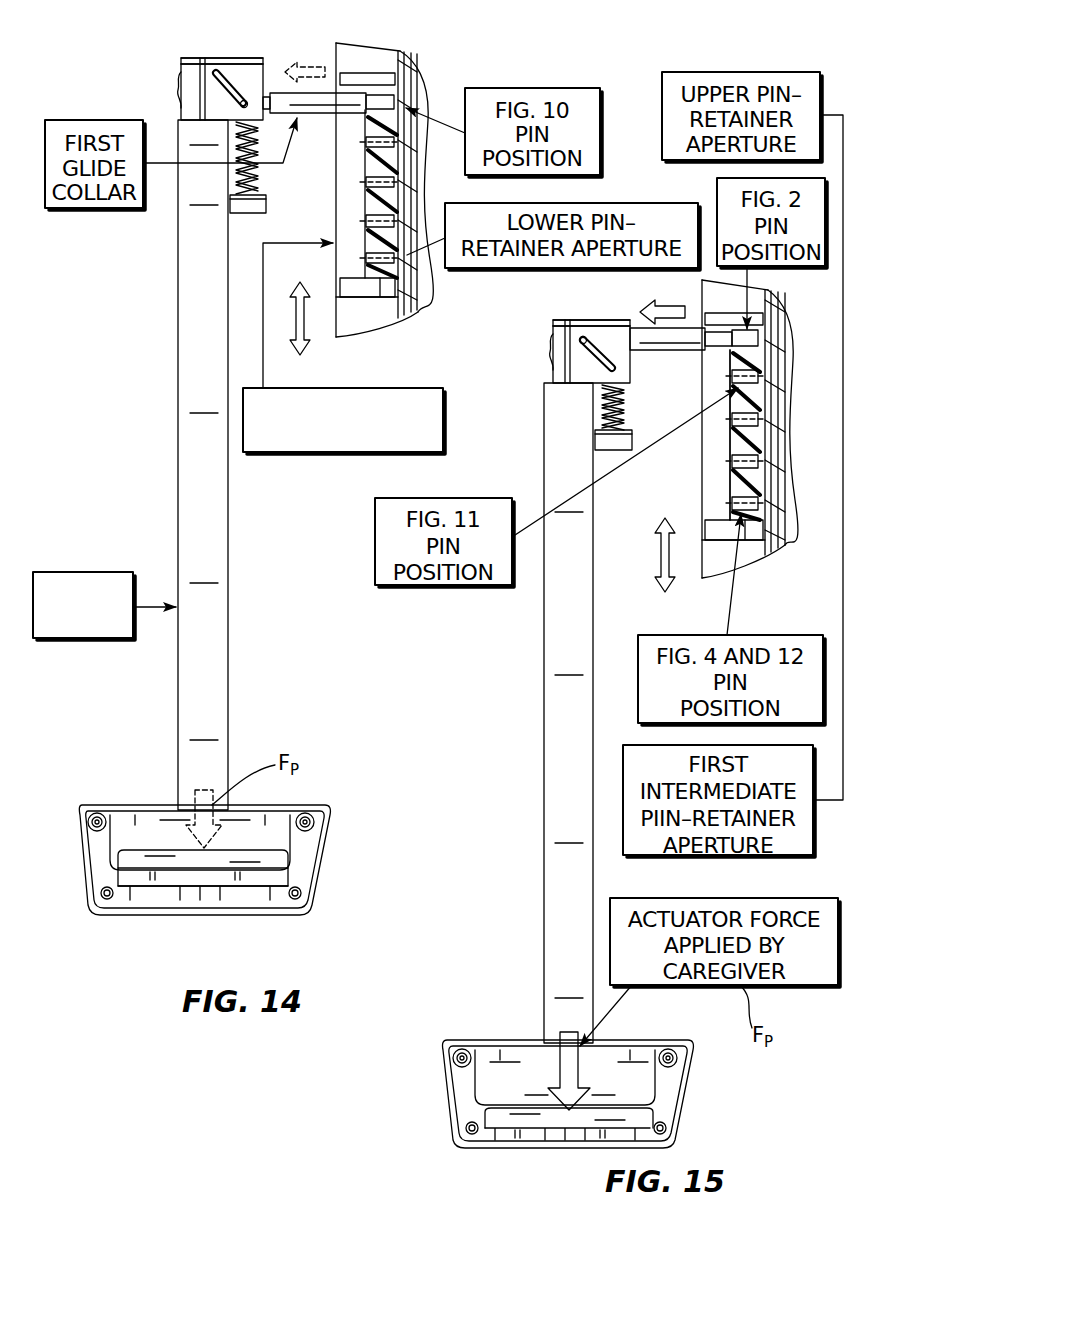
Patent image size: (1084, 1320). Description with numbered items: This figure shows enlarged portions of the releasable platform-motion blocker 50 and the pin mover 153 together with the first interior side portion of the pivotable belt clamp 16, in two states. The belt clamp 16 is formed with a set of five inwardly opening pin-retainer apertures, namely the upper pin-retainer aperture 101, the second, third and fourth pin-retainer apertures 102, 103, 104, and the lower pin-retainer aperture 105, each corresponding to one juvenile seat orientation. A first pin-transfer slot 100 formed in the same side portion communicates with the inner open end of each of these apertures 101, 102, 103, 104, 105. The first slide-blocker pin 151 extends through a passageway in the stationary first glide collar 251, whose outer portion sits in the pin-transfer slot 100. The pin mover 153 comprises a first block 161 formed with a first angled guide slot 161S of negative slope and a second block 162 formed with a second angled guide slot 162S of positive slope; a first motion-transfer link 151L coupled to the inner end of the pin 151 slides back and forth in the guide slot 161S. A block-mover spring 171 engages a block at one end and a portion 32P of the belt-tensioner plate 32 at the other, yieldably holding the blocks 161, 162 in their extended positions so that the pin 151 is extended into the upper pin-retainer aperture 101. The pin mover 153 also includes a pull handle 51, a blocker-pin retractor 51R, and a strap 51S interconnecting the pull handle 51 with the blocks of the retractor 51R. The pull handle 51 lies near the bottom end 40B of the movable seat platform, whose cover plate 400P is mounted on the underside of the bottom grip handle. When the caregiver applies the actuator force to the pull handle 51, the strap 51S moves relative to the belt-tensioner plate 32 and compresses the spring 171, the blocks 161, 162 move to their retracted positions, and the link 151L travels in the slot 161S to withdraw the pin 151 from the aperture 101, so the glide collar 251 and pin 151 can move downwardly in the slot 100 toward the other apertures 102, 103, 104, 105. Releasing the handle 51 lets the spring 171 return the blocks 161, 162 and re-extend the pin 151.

In FIG. 14, the pivotable belt clamp 16 is at (405, 45).
In FIG. 15, the pivotable belt clamp 16 is at (776, 300).
In FIG. 14, the belt-tensioner plate 32 is at (272, 207).
In FIG. 15, the belt-tensioner plate 32 is at (637, 432).
In FIG. 14, the portion of belt-tensioner plate 32P is at (266, 195).
In FIG. 15, the portion of belt-tensioner plate 32P is at (630, 425).
In FIG. 14, the bottom end of movable seat platform 40B is at (83, 882).
In FIG. 15, the bottom end of movable seat platform 40B is at (441, 1101).
In FIG. 14, the releasable platform-motion blocker 50 is at (142, 688).
In FIG. 15, the releasable platform-motion blocker 50 is at (524, 910).
In FIG. 14, the pull handle 51 is at (260, 866).
In FIG. 15, the pull handle 51 is at (620, 1122).
In FIG. 14, the blocker-pin retractor 51R is at (212, 50).
In FIG. 15, the blocker-pin retractor 51R is at (530, 350).
In FIG. 14, the strap 51S is at (200, 440).
In FIG. 15, the strap 51S is at (555, 800).
In FIG. 14, the first pin-transfer slot 100 is at (292, 455).
In FIG. 15, the first pin-transfer slot 100 is at (714, 466).
In FIG. 14, the upper pin-retainer aperture 101 is at (402, 100).
In FIG. 15, the upper pin-retainer aperture 101 is at (730, 72).
In FIG. 14, the second pin-retainer aperture 102 is at (406, 140).
In FIG. 15, the second pin-retainer aperture 102 is at (815, 822).
In FIG. 14, the third pin-retainer aperture 103 is at (410, 172).
In FIG. 15, the third pin-retainer aperture 103 is at (765, 420).
In FIG. 14, the fourth pin-retainer aperture 104 is at (410, 202).
In FIG. 15, the fourth pin-retainer aperture 104 is at (770, 460).
In FIG. 14, the lower pin-retainer aperture 105 is at (468, 268).
In FIG. 15, the lower pin-retainer aperture 105 is at (475, 268).
In FIG. 14, the first slide-blocker pin 151 is at (372, 98).
In FIG. 15, the first slide-blocker pin 151 is at (715, 345).
In FIG. 14, the first motion-transfer link 151L is at (206, 107).
In FIG. 15, the first motion-transfer link 151L is at (590, 318).
In FIG. 14, the pin mover 153 is at (72, 572).
In FIG. 14, the first block 161 is at (232, 70).
In FIG. 15, the first block 161 is at (615, 333).
In FIG. 14, the first angled guide slot 161S is at (243, 100).
In FIG. 15, the first angled guide slot 161S is at (618, 355).
In FIG. 14, the second block 162 is at (190, 110).
In FIG. 15, the second block 162 is at (553, 362).
In FIG. 14, the second angled guide slot 162S is at (186, 75).
In FIG. 15, the second angled guide slot 162S is at (553, 340).
In FIG. 14, the block-mover spring 171 is at (245, 163).
In FIG. 15, the block-mover spring 171 is at (600, 402).
In FIG. 14, the first glide collar 251 is at (322, 118).
In FIG. 15, the first glide collar 251 is at (688, 325).
In FIG. 14, the cover plate 400P is at (76, 838).
In FIG. 15, the cover plate 400P is at (441, 1068).